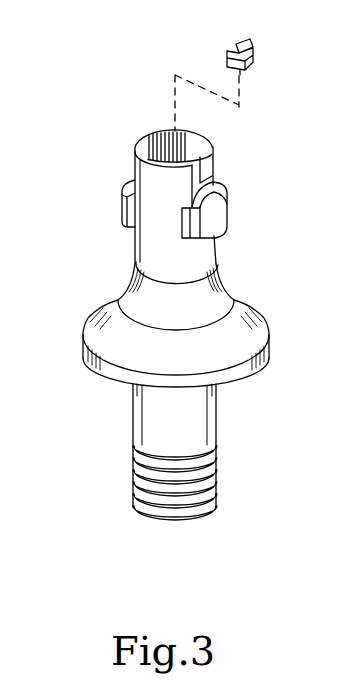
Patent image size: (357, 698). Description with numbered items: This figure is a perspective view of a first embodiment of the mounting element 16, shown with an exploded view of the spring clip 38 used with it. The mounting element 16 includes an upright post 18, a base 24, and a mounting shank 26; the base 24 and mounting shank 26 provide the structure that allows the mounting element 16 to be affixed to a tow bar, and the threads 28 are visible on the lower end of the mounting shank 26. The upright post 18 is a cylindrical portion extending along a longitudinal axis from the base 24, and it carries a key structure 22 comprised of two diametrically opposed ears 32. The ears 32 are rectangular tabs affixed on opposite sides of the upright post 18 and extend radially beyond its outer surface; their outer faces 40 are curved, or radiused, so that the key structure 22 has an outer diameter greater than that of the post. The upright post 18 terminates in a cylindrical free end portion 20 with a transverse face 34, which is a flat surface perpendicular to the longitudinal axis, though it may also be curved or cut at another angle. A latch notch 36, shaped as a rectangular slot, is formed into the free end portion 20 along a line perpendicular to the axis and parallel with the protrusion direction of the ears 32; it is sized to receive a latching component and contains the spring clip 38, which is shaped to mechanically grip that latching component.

The mounting element 16 is at (255, 167).
The upright post 18 is at (205, 259).
The free end portion 20 is at (134, 160).
The key structure 22 is at (258, 195).
The base 24 is at (256, 313).
The mounting shank 26 is at (262, 397).
The threads 28 is at (212, 488).
The ears 32 is at (121, 203).
The transverse face 34 is at (142, 152).
The latch notch 36 is at (213, 140).
The spring clip 38 is at (254, 48).
The outer faces 40 is at (217, 212).